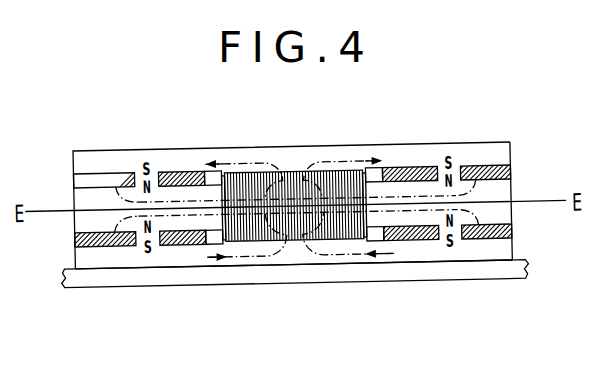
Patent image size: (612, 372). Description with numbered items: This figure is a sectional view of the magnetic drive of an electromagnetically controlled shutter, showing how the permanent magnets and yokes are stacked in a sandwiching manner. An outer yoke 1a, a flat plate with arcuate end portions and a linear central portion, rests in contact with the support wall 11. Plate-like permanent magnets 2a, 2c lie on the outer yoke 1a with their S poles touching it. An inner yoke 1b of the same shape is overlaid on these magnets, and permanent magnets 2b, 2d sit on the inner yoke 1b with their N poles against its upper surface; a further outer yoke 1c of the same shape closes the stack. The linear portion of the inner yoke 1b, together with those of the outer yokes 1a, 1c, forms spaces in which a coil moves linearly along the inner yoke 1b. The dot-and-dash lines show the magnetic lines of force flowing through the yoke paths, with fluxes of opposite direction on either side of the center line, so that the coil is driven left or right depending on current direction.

The outer yoke 1a is at (487, 252).
The inner yoke 1b is at (500, 212).
The outer yoke 1c is at (487, 157).
The permanent magnet 2a is at (72, 239).
The permanent magnet 2b is at (72, 179).
The permanent magnet 2c is at (507, 233).
The permanent magnet 2d is at (507, 169).
The support wall 11 is at (103, 277).